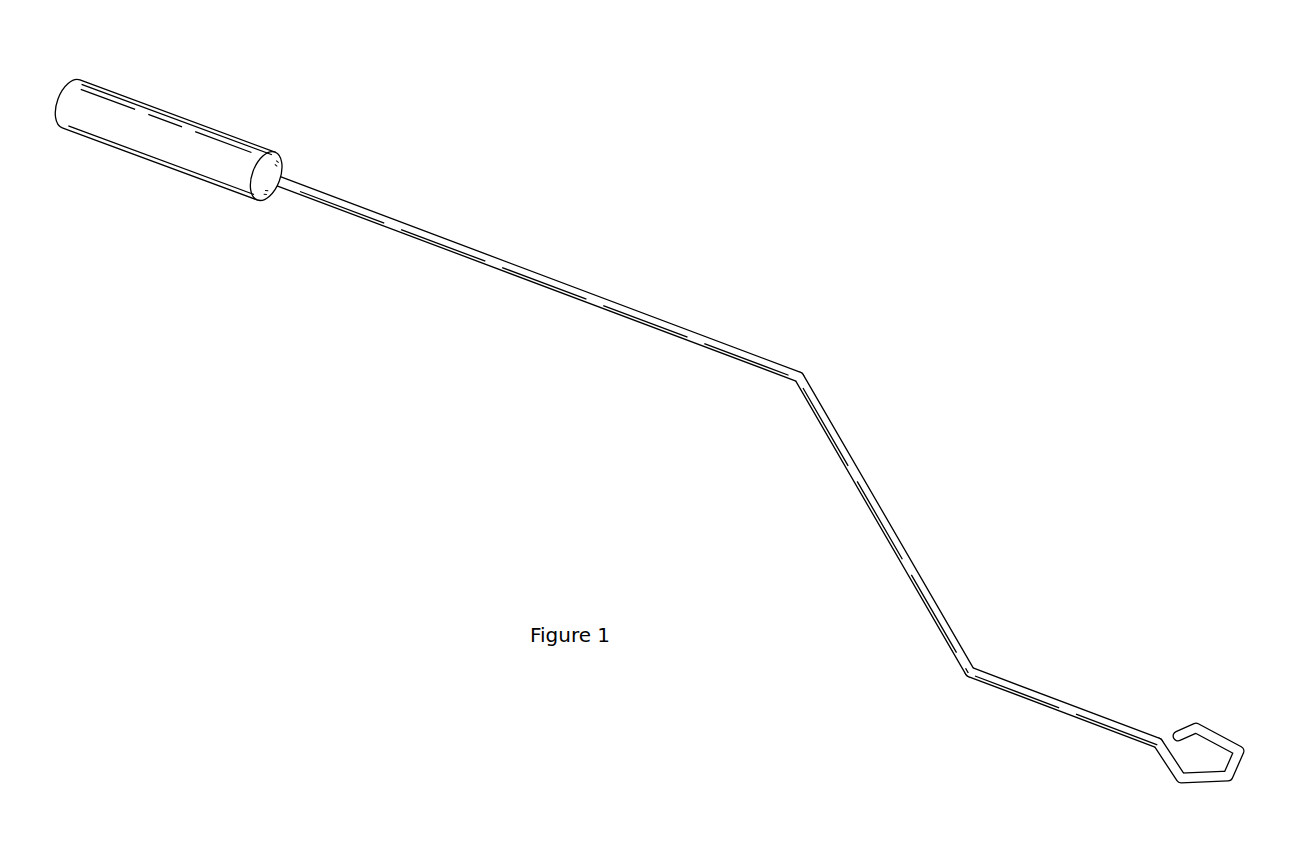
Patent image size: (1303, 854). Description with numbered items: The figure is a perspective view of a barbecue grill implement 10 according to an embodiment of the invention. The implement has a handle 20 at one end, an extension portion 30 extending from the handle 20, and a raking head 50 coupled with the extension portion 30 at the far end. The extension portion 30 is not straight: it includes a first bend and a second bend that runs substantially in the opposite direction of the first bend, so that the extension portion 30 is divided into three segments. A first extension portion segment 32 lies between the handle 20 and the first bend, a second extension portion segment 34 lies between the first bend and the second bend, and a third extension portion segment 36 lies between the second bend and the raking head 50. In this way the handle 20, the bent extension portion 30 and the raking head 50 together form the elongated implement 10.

The barbecue grill implement 10 is at (1047, 80).
The handle 20 is at (147, 102).
The extension portion 30 is at (850, 232).
The first extension portion segment 32 is at (545, 276).
The second extension portion segment 34 is at (862, 493).
The third extension portion segment 36 is at (1062, 702).
The raking head 50 is at (1215, 730).